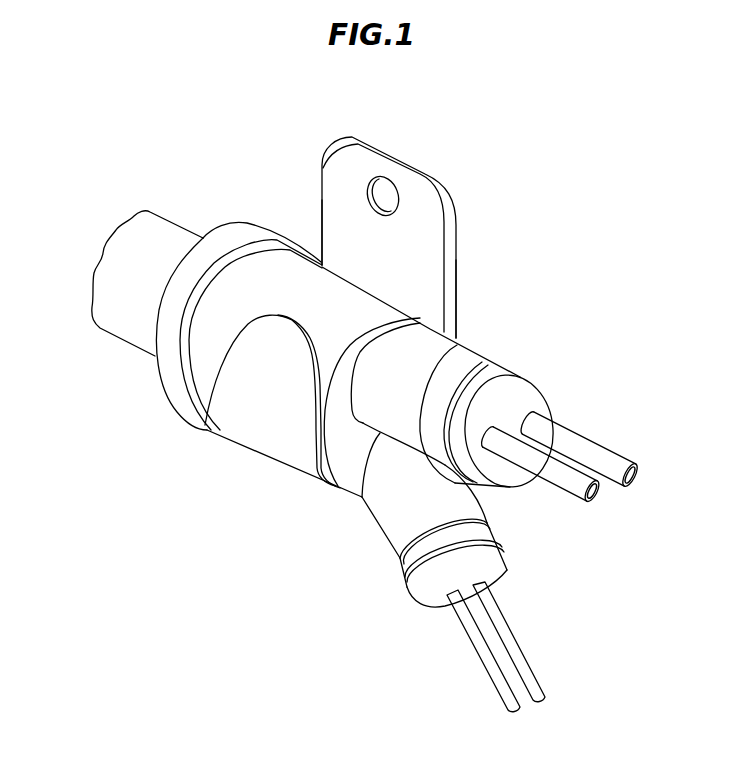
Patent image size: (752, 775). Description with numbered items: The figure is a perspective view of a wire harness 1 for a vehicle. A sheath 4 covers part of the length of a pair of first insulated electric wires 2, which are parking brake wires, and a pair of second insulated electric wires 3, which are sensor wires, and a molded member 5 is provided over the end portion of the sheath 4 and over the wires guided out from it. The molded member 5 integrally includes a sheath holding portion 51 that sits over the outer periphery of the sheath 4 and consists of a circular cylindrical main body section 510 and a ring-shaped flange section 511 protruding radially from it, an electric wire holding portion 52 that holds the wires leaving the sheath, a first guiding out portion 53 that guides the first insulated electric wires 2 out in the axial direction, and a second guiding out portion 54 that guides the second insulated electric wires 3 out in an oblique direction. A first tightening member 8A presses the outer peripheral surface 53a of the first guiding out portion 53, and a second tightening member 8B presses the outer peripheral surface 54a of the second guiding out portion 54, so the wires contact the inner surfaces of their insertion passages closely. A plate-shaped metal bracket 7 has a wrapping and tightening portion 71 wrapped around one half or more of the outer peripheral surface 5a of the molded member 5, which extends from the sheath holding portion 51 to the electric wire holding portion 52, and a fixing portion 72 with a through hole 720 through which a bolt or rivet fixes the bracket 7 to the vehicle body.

The wire harness 1 is at (590, 160).
The first insulated electric wires 2 is at (562, 467).
The second insulated electric wires 3 is at (517, 653).
The sheath 4 is at (168, 228).
The molded member 5 is at (460, 335).
The outer peripheral surface of the molded member 5a is at (268, 267).
The bracket 7 is at (393, 155).
The wrapping and tightening portion 71 is at (278, 445).
The fixing portion 72 is at (402, 247).
The through hole 720 is at (365, 190).
The first tightening member 8A is at (482, 358).
The second tightening member 8B is at (403, 563).
The sheath holding portion 51 is at (88, 389).
The main body section 510 is at (173, 348).
The flange section 511 is at (203, 350).
The electric wire holding portion 52 is at (365, 310).
The first guiding out portion 53 is at (465, 333).
The outer peripheral surface of the first guiding out portion 53a is at (450, 355).
The second guiding out portion 54 is at (382, 505).
The outer peripheral surface of the second guiding out portion 54a is at (387, 540).